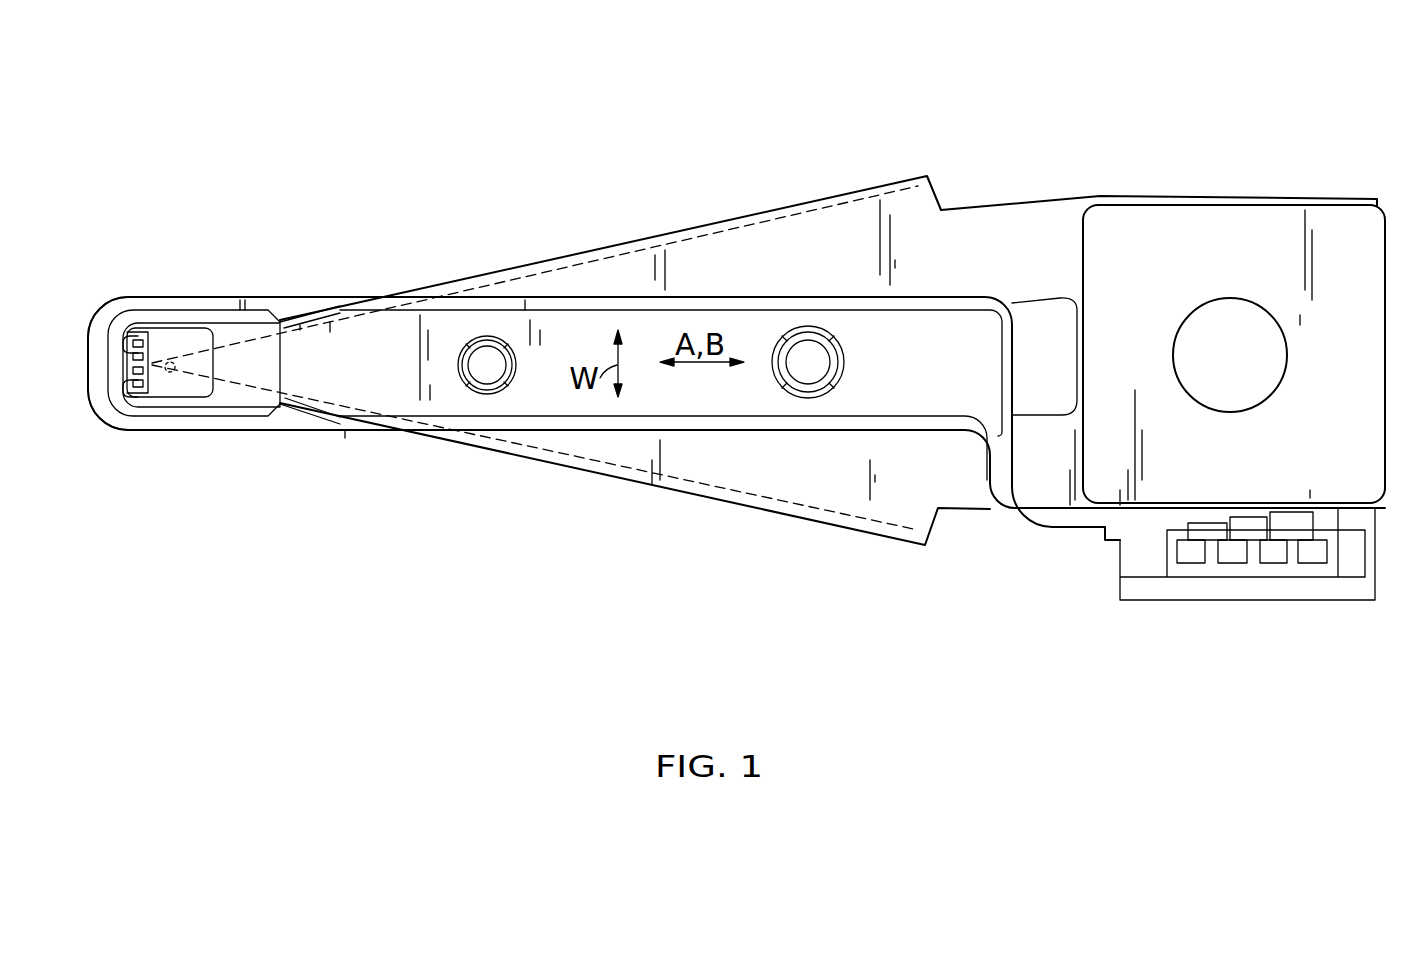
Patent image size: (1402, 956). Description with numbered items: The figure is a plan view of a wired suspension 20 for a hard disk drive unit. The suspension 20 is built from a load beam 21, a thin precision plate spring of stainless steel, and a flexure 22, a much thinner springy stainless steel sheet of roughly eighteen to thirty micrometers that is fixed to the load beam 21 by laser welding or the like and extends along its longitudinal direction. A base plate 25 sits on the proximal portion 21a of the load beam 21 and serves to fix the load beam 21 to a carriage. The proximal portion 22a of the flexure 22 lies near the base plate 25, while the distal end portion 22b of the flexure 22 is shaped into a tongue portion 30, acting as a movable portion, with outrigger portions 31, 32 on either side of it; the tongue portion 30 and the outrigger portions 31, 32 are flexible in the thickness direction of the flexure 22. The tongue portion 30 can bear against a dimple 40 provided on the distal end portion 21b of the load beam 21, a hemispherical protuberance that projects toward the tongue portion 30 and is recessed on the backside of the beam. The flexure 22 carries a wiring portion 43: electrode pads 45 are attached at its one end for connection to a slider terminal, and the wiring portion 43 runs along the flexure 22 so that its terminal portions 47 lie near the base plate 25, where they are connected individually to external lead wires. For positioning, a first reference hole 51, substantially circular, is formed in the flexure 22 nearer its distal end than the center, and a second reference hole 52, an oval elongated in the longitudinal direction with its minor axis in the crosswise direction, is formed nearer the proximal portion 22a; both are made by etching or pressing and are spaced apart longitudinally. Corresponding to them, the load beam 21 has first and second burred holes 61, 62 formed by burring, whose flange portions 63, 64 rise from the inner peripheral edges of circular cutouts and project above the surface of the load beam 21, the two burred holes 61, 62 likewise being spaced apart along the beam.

The suspension 20 is at (448, 148).
The load beam 21 is at (709, 240).
The proximal portion of the load beam 21a is at (1240, 196).
The distal end portion of the load beam 21b is at (200, 385).
The flexure 22 is at (390, 395).
The proximal portion of the flexure 22a is at (1036, 320).
The distal end portion of the flexure 22b is at (170, 284).
The base plate 25 is at (1152, 240).
The tongue portion 30 is at (190, 340).
The outrigger portion 31 is at (127, 307).
The outrigger portion 32 is at (190, 425).
The dimple 40 is at (172, 378).
The wiring portion 43 is at (312, 420).
The electrode pads 45 is at (142, 396).
The terminal portions 47 is at (1195, 556).
The first reference hole 51 is at (510, 361).
The second reference hole 52 is at (832, 361).
The first burred hole 61 is at (497, 380).
The second burred hole 62 is at (805, 375).
The flange portion 63 is at (514, 360).
The flange portion 64 is at (842, 358).